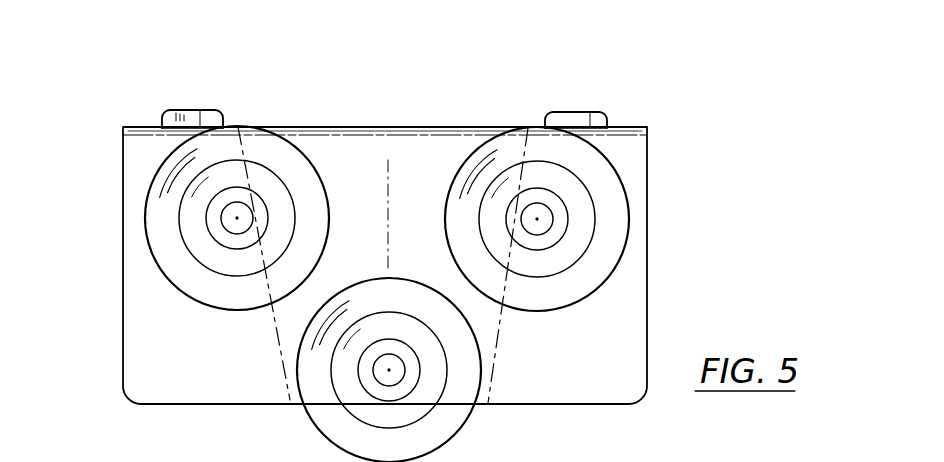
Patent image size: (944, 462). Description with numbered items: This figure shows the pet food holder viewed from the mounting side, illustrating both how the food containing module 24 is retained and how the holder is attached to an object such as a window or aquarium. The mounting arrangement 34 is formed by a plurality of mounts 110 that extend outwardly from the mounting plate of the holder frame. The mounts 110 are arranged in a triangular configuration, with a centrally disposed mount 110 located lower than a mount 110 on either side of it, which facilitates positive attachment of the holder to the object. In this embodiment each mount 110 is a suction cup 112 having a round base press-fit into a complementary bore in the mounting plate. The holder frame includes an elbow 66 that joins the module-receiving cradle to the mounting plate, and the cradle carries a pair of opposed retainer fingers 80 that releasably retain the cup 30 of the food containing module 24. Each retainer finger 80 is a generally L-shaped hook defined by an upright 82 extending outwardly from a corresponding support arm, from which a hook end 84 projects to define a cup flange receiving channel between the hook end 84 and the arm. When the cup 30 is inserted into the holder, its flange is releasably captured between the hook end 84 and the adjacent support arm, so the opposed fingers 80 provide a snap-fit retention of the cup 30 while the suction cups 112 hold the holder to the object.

The food containing module 24 is at (460, 62).
The cup 30 is at (365, 75).
The mounting arrangement 34 is at (121, 253).
The elbow 66 is at (638, 128).
The retainer finger 80 is at (178, 106).
The upright 82 is at (165, 120).
The hook end 84 is at (217, 112).
The mount 110 is at (141, 190).
The suction cup 112 is at (190, 282).